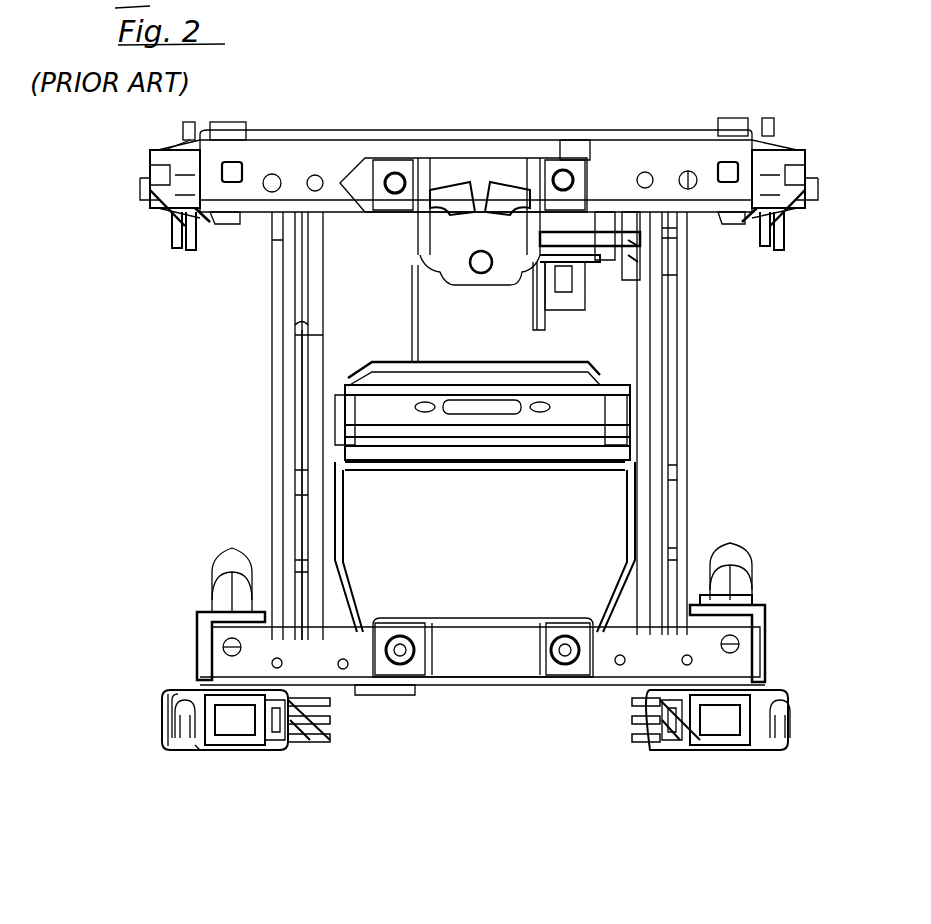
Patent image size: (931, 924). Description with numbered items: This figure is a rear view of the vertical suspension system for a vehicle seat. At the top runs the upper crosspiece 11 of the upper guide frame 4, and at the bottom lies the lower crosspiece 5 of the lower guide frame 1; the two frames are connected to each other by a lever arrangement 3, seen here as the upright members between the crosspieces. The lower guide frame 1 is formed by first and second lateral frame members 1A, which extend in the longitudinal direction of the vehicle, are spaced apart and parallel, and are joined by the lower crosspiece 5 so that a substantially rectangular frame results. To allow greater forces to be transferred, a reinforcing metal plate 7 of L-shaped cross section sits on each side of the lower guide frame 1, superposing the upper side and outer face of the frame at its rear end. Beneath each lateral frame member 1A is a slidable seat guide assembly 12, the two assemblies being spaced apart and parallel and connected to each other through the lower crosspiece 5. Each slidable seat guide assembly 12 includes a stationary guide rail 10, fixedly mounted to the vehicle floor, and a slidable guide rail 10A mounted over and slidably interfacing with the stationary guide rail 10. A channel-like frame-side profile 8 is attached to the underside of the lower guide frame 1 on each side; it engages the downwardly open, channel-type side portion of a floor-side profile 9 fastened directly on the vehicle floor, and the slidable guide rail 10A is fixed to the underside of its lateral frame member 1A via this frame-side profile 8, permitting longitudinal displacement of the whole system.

The lower guide frame 1 is at (454, 589).
The lateral frame member 1A is at (197, 645).
The lever arrangement 3 is at (698, 378).
The upper guide frame 4 is at (768, 112).
The lower crosspiece 5 is at (622, 668).
The reinforcing metal plate 7 is at (205, 618).
The frame-side profile 8 is at (170, 695).
The floor-side profile 9 is at (195, 750).
The stationary guide rail 10 is at (280, 748).
The slidable guide rail 10A is at (685, 735).
The upper crosspiece 11 is at (655, 163).
The slidable seat guide assembly 12 is at (238, 758).